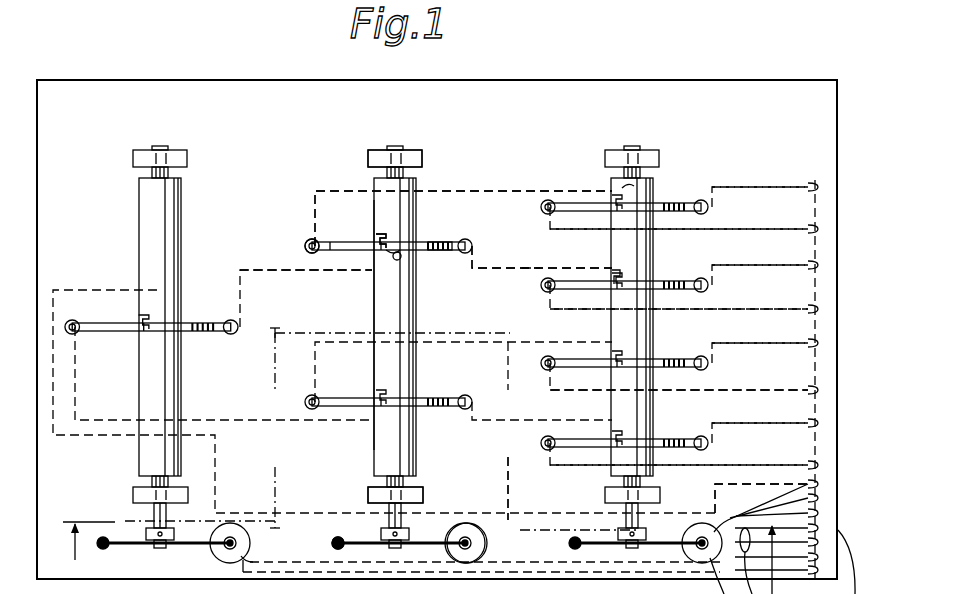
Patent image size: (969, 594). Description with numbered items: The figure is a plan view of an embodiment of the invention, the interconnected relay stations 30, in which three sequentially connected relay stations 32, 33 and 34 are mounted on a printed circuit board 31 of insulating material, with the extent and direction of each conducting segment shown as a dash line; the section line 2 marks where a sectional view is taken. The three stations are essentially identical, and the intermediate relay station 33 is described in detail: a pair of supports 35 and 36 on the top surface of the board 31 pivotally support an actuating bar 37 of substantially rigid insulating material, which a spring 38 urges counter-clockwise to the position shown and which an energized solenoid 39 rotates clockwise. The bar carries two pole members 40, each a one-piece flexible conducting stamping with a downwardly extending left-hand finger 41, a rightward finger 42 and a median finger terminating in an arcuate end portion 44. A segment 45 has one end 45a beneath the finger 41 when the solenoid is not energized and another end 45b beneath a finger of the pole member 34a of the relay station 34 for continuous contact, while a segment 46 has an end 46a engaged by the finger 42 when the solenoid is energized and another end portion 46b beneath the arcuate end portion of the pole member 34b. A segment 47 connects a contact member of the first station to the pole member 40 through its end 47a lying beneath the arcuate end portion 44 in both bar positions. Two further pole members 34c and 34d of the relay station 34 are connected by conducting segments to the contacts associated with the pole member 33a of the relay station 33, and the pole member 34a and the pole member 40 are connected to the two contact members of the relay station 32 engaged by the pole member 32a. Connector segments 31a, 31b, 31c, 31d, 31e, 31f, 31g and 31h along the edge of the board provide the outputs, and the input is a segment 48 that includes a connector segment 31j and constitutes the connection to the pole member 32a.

The interconnected relay stations 30 is at (82, 70).
The board 31 is at (208, 82).
The section line 2- 2 is at (89, 548).
The relay station 32 is at (122, 146).
The pole member 32a is at (205, 324).
The intermediate relay station 33 is at (357, 148).
The pole member 33a is at (456, 396).
The relay station 34 is at (590, 146).
The pole member 34a is at (690, 194).
The pole member 34b is at (690, 274).
The pole member 34c is at (684, 358).
The pole member 34d is at (684, 436).
The support 35 is at (420, 496).
The support 36 is at (412, 160).
The actuating bar 37 is at (417, 334).
The spring 38 is at (338, 542).
The solenoid 39 is at (472, 560).
The pole member 40 is at (470, 216).
The left-hand finger 41 is at (346, 252).
The rightward finger 42 is at (445, 254).
The arcuate end portion 44 is at (372, 246).
The segment 45 is at (338, 190).
The end of segment 45a is at (310, 242).
The another end of segment 45b is at (660, 182).
The segment 46 is at (522, 272).
The end of segment 46a is at (479, 258).
The end portion of segment 46b is at (642, 272).
The segment 47 is at (287, 272).
The end of segment 47a is at (398, 264).
The input segment 48 is at (559, 512).
The connector segment 31a is at (816, 182).
The connector segment 31b is at (818, 224).
The connector segment 31c is at (818, 262).
The connector segment 31d is at (818, 305).
The connector segment 31e is at (818, 341).
The connector segment 31f is at (818, 386).
The connector segment 31g is at (818, 420).
The connector segment 31h is at (818, 462).
The connector segment 31j is at (790, 490).